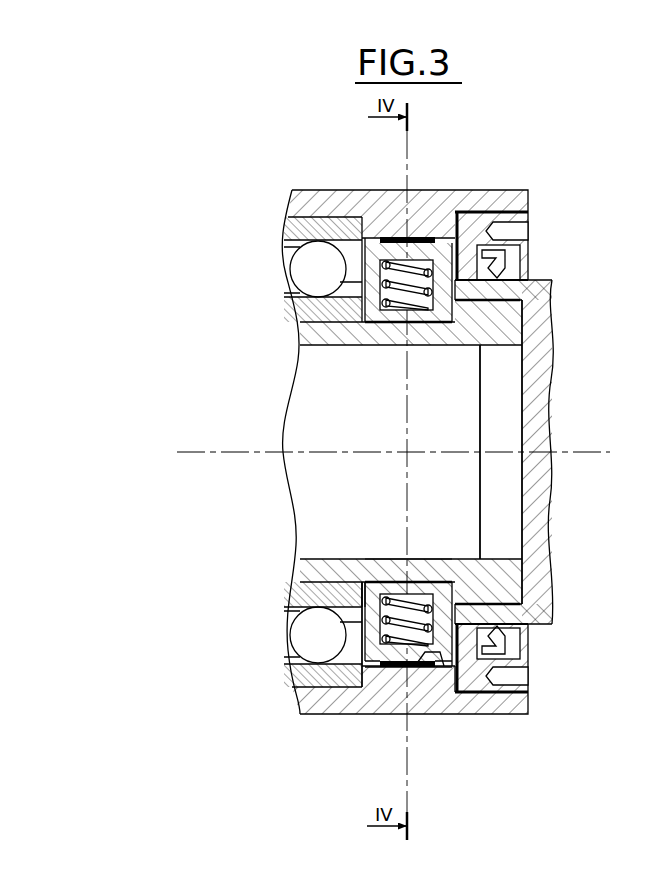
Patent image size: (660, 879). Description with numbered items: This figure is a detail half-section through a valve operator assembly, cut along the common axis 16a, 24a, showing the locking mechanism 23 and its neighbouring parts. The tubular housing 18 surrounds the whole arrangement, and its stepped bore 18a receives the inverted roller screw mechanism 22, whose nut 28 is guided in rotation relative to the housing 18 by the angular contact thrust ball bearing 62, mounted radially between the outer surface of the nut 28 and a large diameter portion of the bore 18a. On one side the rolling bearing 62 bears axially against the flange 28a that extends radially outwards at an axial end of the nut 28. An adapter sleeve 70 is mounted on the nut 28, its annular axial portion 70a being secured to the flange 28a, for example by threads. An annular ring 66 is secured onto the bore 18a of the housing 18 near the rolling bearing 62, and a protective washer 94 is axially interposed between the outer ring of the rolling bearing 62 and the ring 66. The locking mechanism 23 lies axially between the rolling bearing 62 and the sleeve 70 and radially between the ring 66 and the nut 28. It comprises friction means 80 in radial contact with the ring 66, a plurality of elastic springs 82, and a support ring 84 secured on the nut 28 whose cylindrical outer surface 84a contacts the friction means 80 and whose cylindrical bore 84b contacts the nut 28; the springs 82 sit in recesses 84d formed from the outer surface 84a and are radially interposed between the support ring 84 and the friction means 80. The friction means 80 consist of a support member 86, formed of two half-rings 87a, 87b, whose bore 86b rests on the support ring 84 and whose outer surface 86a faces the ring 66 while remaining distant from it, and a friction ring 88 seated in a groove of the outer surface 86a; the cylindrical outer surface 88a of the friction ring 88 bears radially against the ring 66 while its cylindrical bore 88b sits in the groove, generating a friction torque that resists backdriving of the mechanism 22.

The axis 16a is at (193, 452).
The axis of the screw 24a is at (302, 471).
The tubular housing 18 is at (299, 716).
The bore of the housing 18a is at (303, 678).
The inverted roller screw mechanism 22 is at (440, 353).
The locking mechanism 23 is at (457, 238).
The nut 28 is at (504, 321).
The flange of the nut 28a is at (506, 583).
The rolling bearing 62 is at (312, 226).
The annular ring 66 is at (410, 220).
The adapter sleeve 70 is at (544, 282).
The annular axial portion of the sleeve 70a is at (482, 613).
The friction means 80 is at (386, 236).
The elastic springs 82 is at (428, 262).
The support ring 84 is at (472, 250).
The cylindrical outer surface of the support ring 84a is at (498, 690).
The cylindrical bore of the support ring 84b is at (376, 557).
The recesses 84d is at (366, 586).
The support member 86 is at (368, 247).
The outer surface of the support member 86a is at (443, 682).
The bore of the support member 86b is at (356, 688).
The half-ring 87a is at (470, 632).
The half-ring 87b is at (390, 253).
The friction ring 88 is at (396, 256).
The cylindrical outer surface of the friction ring 88a is at (400, 680).
The cylindrical bore of the friction ring 88b is at (428, 675).
The protective washer 94 is at (368, 663).